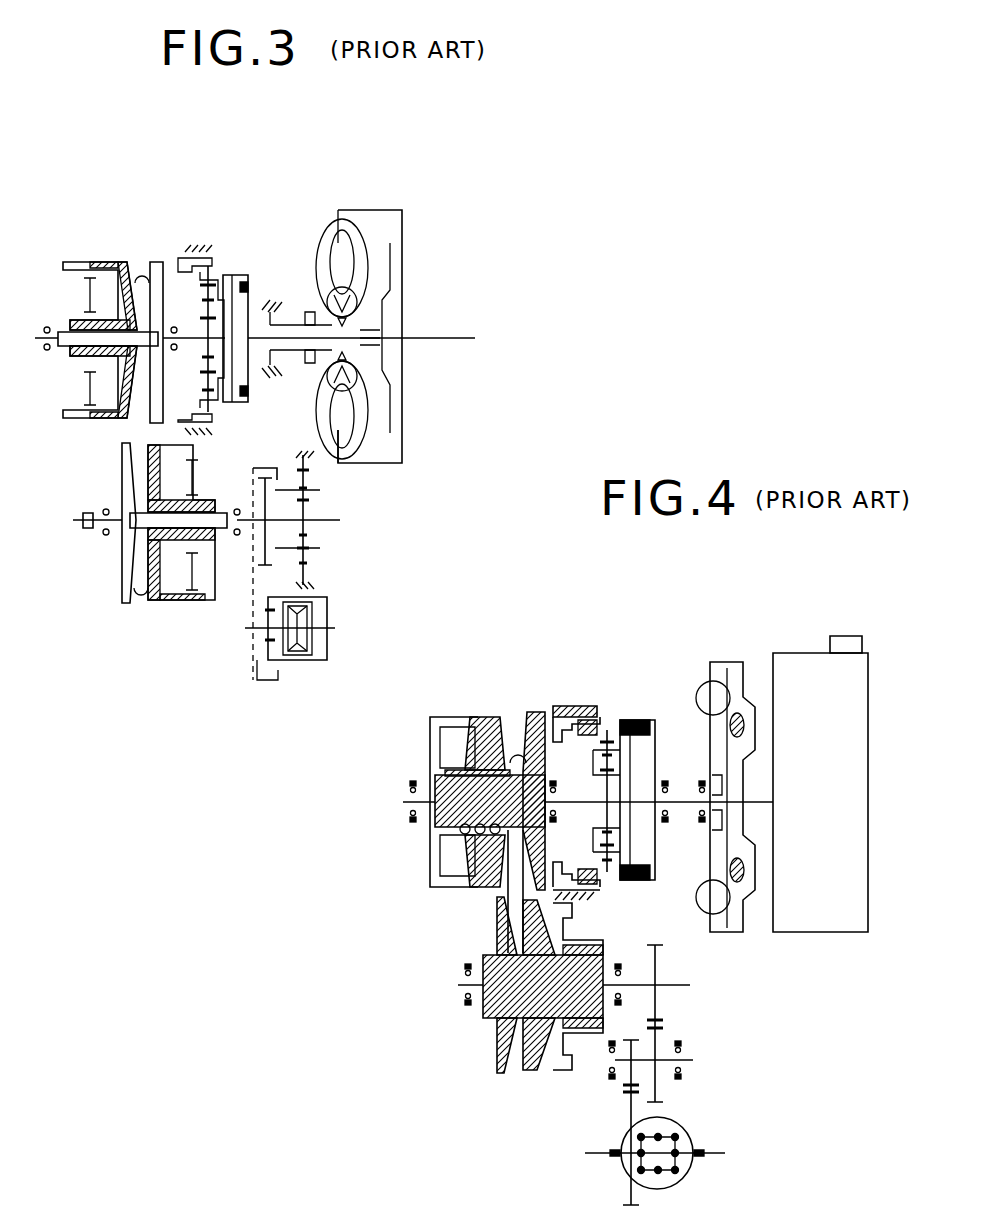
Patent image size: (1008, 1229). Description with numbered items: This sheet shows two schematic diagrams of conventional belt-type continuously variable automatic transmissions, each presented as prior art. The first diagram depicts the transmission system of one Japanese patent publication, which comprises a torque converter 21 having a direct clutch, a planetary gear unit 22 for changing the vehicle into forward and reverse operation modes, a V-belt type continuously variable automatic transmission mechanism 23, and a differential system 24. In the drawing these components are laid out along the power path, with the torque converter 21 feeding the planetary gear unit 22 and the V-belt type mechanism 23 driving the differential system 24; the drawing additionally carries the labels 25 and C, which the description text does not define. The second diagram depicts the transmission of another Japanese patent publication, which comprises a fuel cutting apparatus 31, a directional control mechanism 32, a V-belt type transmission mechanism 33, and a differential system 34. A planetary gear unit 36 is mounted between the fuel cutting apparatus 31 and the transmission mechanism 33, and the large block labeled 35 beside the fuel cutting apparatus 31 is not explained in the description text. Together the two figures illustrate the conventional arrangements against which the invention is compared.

In FIG. 3, the torque converter 21 is at (333, 215).
In FIG. 3, the planetary gear unit 22 is at (196, 242).
In FIG. 3, the V-belt type continuously variable automatic transmission mechanism 23 is at (95, 257).
In FIG. 3, the differential system 24 is at (330, 598).
In FIG. 3, the clutch 25 is at (150, 432).
In FIG. 3, the carrier C is at (238, 274).
In FIG. 4, the fuel cutting apparatus 31 is at (720, 660).
In FIG. 4, the directional control mechanism 32 is at (575, 697).
In FIG. 4, the V-belt type transmission mechanism 33 is at (481, 945).
In FIG. 4, the differential system 34 is at (688, 1128).
In FIG. 4, the engine 35 is at (845, 802).
In FIG. 4, the planetary gear unit 36 is at (632, 750).